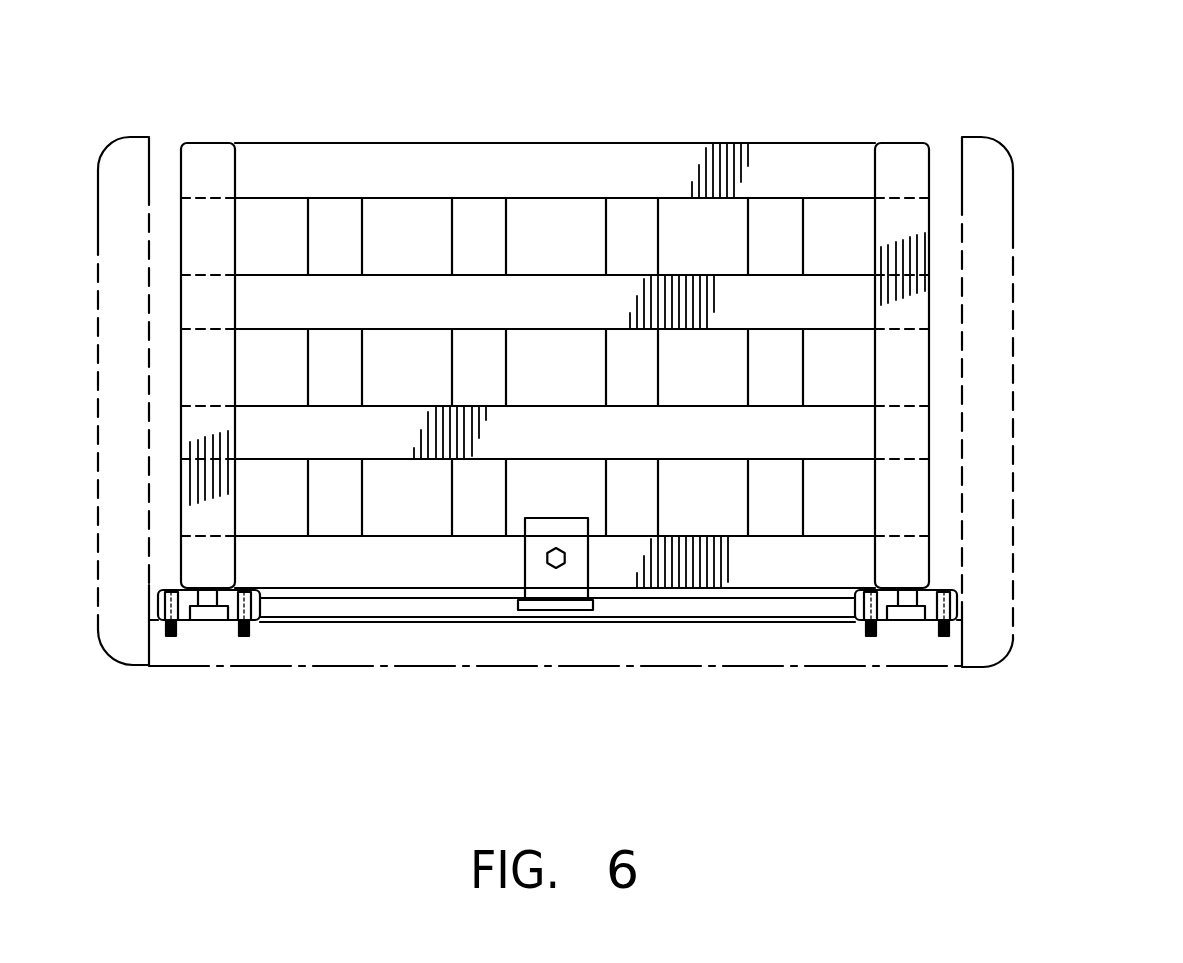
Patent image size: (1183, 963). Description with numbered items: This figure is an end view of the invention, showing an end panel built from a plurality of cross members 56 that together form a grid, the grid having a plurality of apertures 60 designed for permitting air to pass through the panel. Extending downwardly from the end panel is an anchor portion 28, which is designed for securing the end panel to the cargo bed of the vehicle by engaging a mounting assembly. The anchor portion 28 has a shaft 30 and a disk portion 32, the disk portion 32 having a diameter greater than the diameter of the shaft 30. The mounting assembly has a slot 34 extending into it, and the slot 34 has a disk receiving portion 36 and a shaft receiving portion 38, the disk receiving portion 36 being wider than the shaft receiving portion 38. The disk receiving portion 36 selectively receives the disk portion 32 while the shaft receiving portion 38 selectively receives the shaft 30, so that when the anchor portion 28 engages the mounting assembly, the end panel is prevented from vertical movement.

The anchor portion 28 is at (212, 622).
The shaft 30 is at (212, 600).
The disk portion 32 is at (222, 620).
The slot 34 is at (950, 614).
The disk receiving portion 36 is at (953, 625).
The shaft receiving portion 38 is at (912, 600).
The cross members 56 is at (572, 297).
The apertures 60 is at (710, 375).